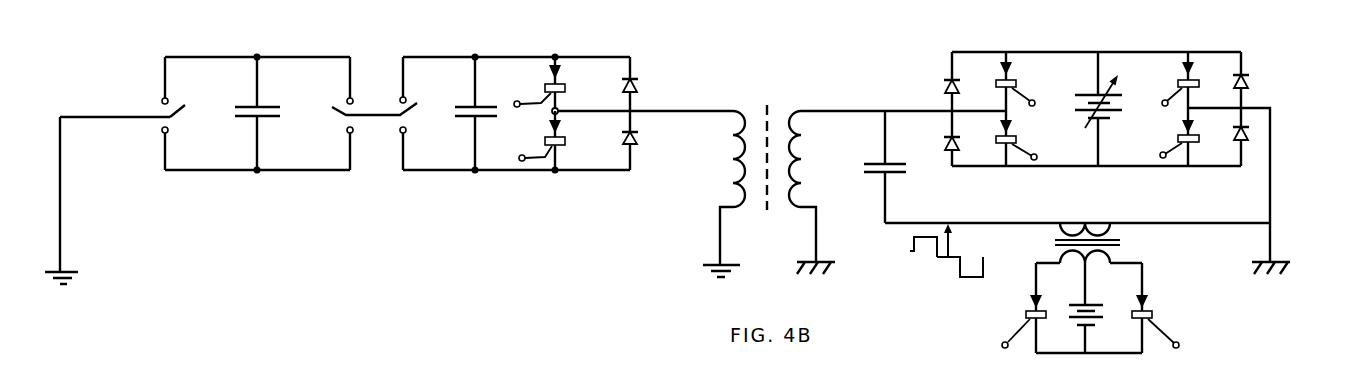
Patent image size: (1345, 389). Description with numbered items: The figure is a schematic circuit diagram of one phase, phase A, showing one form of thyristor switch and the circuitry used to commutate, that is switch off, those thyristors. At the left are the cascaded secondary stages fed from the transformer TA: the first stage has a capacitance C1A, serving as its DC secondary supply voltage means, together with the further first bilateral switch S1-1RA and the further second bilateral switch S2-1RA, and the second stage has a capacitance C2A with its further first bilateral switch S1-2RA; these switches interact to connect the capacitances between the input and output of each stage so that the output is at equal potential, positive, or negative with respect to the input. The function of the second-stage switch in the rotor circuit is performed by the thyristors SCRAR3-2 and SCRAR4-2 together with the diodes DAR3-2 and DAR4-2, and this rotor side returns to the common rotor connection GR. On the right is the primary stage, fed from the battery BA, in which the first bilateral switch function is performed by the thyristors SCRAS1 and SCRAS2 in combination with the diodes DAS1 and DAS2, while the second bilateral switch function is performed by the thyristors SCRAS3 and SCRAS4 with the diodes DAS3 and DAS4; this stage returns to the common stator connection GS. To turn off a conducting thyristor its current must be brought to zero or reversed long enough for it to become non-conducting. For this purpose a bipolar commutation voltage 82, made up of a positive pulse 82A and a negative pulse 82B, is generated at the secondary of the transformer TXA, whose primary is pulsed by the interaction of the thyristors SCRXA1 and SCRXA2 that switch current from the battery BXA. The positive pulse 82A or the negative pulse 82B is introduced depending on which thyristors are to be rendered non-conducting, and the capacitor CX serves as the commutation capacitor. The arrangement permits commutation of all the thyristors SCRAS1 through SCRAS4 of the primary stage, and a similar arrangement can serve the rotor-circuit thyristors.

The further first bilateral switch S1-1RA is at (182, 102).
The capacitance C1A is at (270, 118).
The further second bilateral switch S2-1RA is at (345, 55).
The further first bilateral switch S1-2RA is at (413, 56).
The capacitance C2A is at (486, 117).
The thyristor SCRAR3-2 is at (565, 87).
The thyristor SCRAR4-2 is at (562, 148).
The diode DAR3-2 is at (633, 80).
The diode DAR4-2 is at (640, 137).
The common rotor connection GR is at (82, 273).
The transformer TA is at (767, 102).
The commutation capacitor CX is at (888, 162).
The diode DAS1 is at (943, 88).
The diode DAS2 is at (944, 148).
The thyristor SCRAS1 is at (1007, 80).
The thyristor SCRAS2 is at (1001, 148).
The battery BA is at (1112, 109).
The thyristor SCRAS3 is at (1187, 80).
The thyristor SCRAS4 is at (1195, 143).
The diode DAS3 is at (1248, 82).
The diode DAS4 is at (1249, 133).
The common stator connection GS is at (1284, 271).
The commutation voltage 82 is at (941, 258).
The positive pulse 82A is at (912, 251).
The negative pulse 82B is at (985, 264).
The transformer TXA is at (1112, 243).
The battery BXA is at (1098, 308).
The thyristor SCRXA1 is at (1025, 316).
The thyristor SCRXA2 is at (1153, 313).